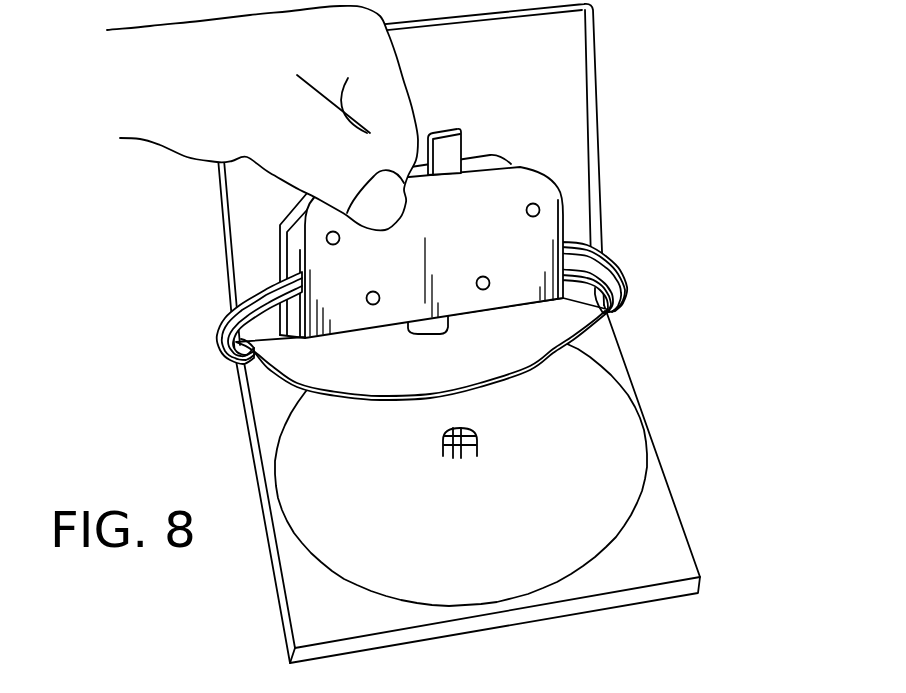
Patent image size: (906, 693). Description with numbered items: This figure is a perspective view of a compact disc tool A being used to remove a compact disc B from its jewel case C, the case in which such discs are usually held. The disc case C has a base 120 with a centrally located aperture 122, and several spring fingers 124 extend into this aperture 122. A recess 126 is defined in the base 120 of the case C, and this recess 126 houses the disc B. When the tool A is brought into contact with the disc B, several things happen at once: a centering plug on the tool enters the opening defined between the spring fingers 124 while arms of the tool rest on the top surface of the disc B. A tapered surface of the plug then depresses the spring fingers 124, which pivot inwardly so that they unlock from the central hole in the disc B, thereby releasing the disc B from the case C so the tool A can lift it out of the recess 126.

The compact disc tool A is at (540, 180).
The compact disc B is at (583, 359).
The jewel case C is at (496, 333).
The base 120 is at (670, 570).
The aperture 122 is at (464, 427).
The spring fingers 124 is at (447, 432).
The recess 126 is at (613, 447).